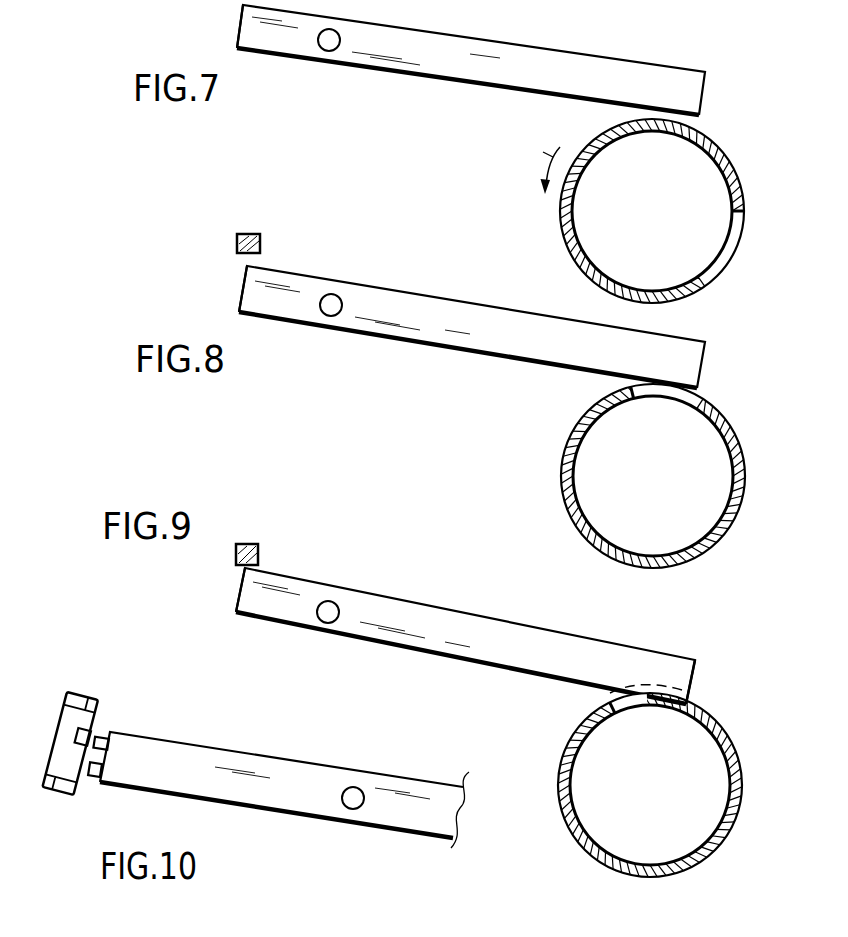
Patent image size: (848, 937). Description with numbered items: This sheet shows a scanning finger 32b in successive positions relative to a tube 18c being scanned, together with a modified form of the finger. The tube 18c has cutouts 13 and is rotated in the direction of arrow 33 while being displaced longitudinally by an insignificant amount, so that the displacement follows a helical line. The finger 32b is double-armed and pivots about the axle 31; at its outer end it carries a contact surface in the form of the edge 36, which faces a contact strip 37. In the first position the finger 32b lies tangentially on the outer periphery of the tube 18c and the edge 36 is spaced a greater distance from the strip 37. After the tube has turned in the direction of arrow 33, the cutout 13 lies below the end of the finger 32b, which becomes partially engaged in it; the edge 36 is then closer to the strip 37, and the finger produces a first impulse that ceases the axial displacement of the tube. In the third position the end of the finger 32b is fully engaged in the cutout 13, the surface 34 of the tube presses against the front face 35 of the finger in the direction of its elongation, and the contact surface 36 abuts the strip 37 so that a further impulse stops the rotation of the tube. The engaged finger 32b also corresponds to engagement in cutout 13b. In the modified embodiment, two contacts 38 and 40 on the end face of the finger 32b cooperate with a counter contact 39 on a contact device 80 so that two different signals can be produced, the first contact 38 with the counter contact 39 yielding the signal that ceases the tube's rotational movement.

In FIG. 7, the cutout 13 is at (726, 259).
In FIG. 8, the cutout 13 is at (696, 395).
In FIG. 9, the cutout 13b is at (603, 691).
In FIG. 7, the tube 18c is at (670, 211).
In FIG. 7, the axle 31 is at (324, 49).
In FIG. 8, the axle 31 is at (327, 316).
In FIG. 9, the axle 31 is at (324, 621).
In FIG. 7, the finger 32b is at (452, 68).
In FIG. 8, the finger 32b is at (472, 327).
In FIG. 9, the finger 32b is at (465, 648).
In FIG. 10, the finger 32b is at (283, 793).
In FIG. 7, the arrow 33 is at (533, 165).
In FIG. 9, the surface 34 is at (690, 700).
In FIG. 9, the front face 35 is at (696, 672).
In FIG. 7, the edge 36 is at (242, 4).
In FIG. 8, the edge 36 is at (246, 267).
In FIG. 9, the edge 36 is at (244, 569).
In FIG. 8, the contact strip 37 is at (262, 243).
In FIG. 9, the contact strip 37 is at (260, 555).
In FIG. 10, the first contact 38 is at (106, 727).
In FIG. 10, the counter contact 39 is at (83, 728).
In FIG. 10, the contact 40 is at (96, 778).
In FIG. 10, the contact device 80 is at (55, 785).